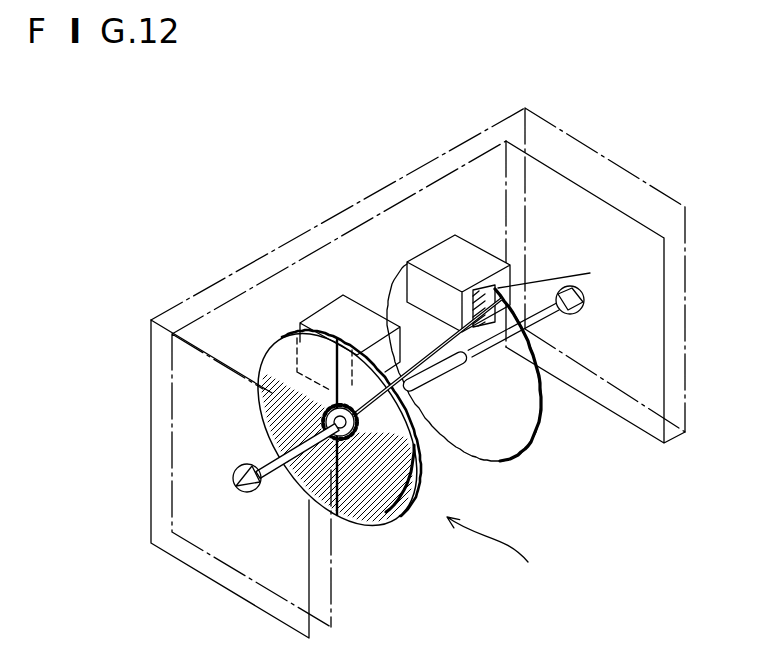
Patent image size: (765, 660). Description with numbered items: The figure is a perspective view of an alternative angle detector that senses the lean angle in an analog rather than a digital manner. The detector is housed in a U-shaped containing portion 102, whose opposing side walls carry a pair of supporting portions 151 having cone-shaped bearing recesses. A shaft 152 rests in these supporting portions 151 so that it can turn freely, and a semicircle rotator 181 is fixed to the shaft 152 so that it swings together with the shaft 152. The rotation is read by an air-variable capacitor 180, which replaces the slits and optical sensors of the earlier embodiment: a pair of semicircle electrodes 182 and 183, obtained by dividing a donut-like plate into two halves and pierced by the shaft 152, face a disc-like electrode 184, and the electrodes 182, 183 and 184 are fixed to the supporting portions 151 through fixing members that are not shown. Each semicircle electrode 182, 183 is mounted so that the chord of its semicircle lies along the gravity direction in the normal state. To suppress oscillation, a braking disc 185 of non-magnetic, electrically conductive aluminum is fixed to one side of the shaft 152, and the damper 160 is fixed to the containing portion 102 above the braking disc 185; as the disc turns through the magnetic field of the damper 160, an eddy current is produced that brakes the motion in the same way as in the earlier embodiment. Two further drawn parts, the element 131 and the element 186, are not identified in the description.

The containing portion 102 is at (633, 185).
The connecting rod 131 is at (508, 296).
The supporting portions 151 is at (584, 298).
The shaft 152 is at (547, 318).
The damper 160 is at (452, 253).
The air-variable capacitor 180 is at (516, 556).
The semicircle rotator 181 is at (448, 490).
The semicircle electrode 182 is at (403, 500).
The semicircle electrode 183 is at (275, 360).
The disc-like electrode 184 is at (445, 452).
The braking disc 185 is at (334, 309).
The ring 186 is at (523, 408).